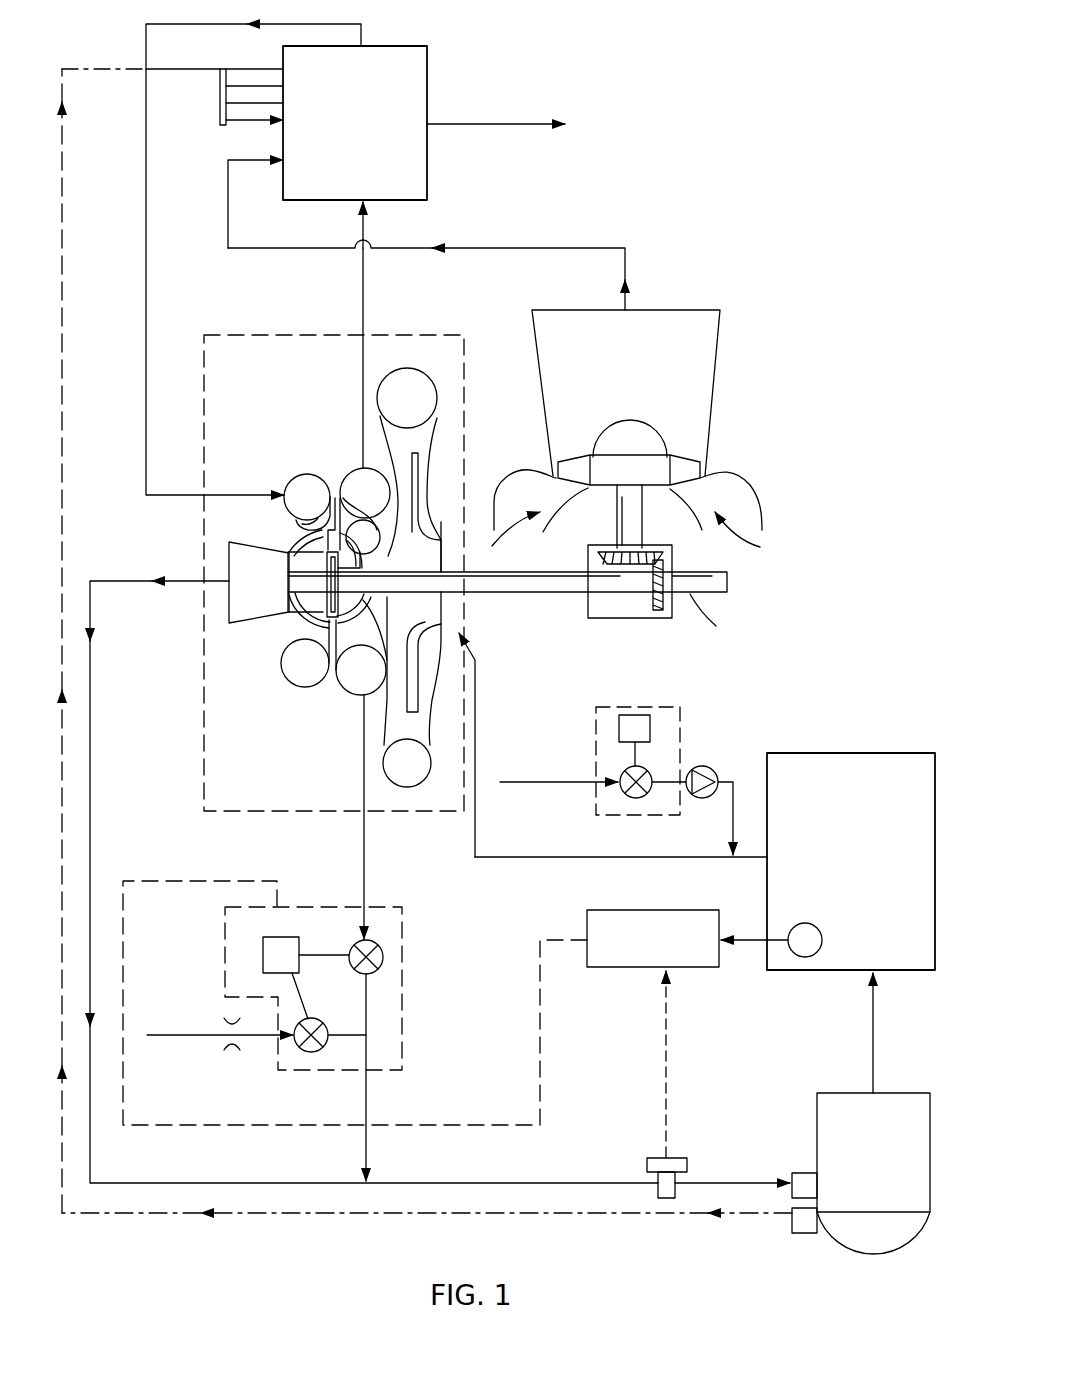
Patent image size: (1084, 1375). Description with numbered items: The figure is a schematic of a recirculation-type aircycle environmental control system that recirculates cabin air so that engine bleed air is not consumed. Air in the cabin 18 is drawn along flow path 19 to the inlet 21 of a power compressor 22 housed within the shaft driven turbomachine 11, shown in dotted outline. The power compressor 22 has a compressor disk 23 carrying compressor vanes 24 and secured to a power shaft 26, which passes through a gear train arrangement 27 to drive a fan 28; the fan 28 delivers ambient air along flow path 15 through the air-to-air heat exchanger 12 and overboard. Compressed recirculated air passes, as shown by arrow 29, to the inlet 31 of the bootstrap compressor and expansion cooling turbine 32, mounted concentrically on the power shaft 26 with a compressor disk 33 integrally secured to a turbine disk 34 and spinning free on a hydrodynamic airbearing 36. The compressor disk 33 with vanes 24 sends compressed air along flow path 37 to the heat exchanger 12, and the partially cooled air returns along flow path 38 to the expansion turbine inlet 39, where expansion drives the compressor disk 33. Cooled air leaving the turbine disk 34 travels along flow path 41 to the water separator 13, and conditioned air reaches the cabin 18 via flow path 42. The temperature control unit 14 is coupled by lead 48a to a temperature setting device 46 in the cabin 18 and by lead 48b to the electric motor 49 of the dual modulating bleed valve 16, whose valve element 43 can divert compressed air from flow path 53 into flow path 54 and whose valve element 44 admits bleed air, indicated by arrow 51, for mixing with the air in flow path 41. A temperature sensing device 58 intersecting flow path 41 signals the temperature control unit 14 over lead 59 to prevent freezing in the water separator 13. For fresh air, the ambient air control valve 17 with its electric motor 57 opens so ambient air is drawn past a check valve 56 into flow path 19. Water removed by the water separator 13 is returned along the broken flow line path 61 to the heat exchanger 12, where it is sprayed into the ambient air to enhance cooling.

The shaft driven turbomachine 11 is at (202, 733).
The air-to-air heat exchanger 12 is at (428, 82).
The water separator 13 is at (816, 1112).
The temperature control unit 14 is at (622, 910).
The flow path 15 is at (528, 248).
The electric motor-operated dual modulating bleed valve 16 is at (402, 996).
The electric motor-operated ambient air control valve 17 is at (594, 730).
The cabin 18 is at (858, 753).
The flow path 19 is at (505, 858).
The inlet 21 is at (473, 631).
The power compressor 22 is at (410, 787).
The compressor disk 23 is at (437, 603).
The compressor vanes 24 is at (440, 518).
The power shaft 26 is at (577, 594).
The gear train arrangement 27 is at (642, 603).
The fan 28 is at (707, 468).
The arrow 29 is at (395, 547).
The inlet 31 is at (378, 520).
The bootstrap compressor and expansion cooling turbine 32 is at (266, 600).
The compressor disk 33 is at (342, 522).
The turbine disk 34 is at (312, 620).
The hydrodynamic airbearing 36 is at (331, 552).
The flow path 37 is at (366, 299).
The flow path 38 is at (145, 117).
The expansion turbine inlet 39 is at (300, 478).
The flow path 41 is at (92, 802).
The flow path 42 is at (875, 1042).
The valve element 43 is at (383, 950).
The valve element 44 is at (307, 1053).
The temperature setting device 46 is at (805, 958).
The lead 48a is at (756, 940).
The lead 48b is at (539, 1012).
The electric motor 49 is at (262, 940).
The arrow 51 is at (197, 1042).
The flow path 53 is at (362, 852).
The flow path 54 is at (368, 1094).
The check valve 56 is at (712, 770).
The electric motor 57 is at (651, 731).
The temperature sensing device 58 is at (650, 1158).
The lead 59 is at (668, 1050).
The flow line path 61 is at (498, 1215).